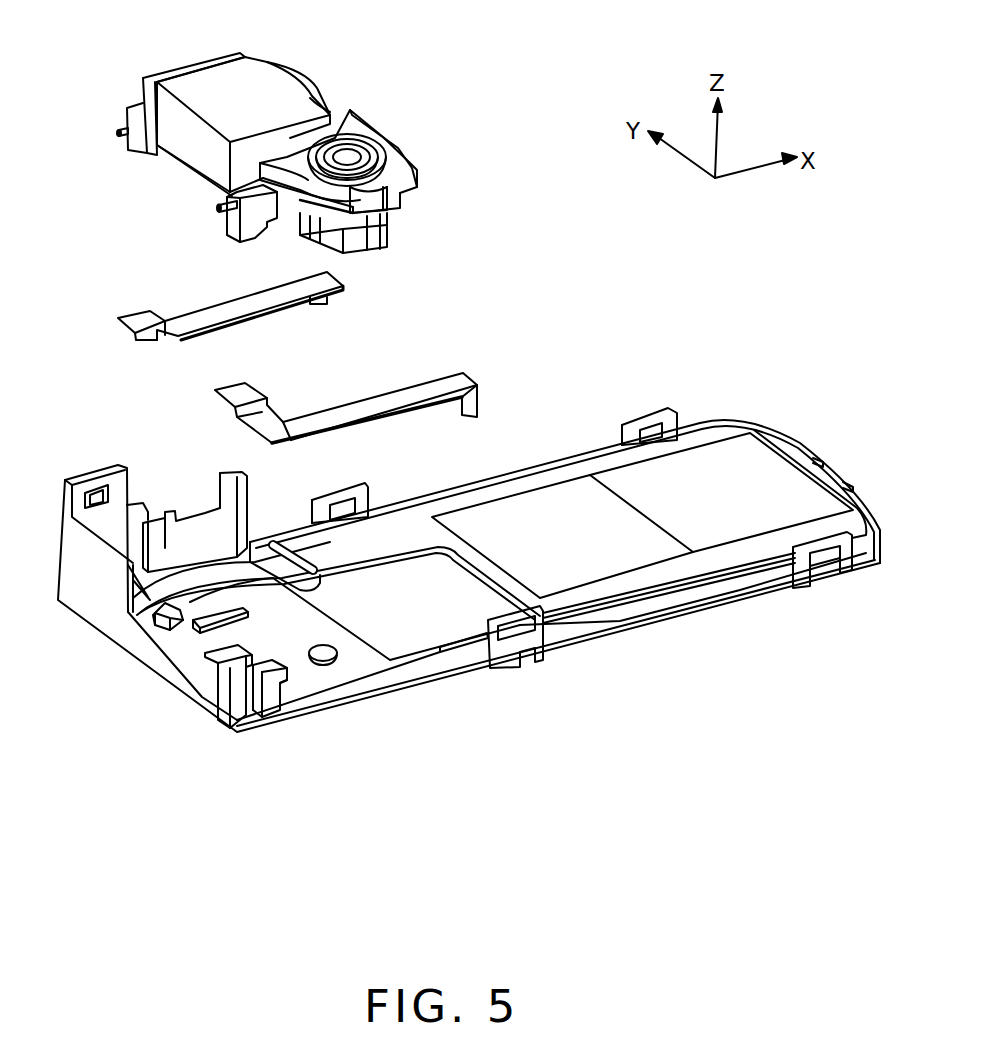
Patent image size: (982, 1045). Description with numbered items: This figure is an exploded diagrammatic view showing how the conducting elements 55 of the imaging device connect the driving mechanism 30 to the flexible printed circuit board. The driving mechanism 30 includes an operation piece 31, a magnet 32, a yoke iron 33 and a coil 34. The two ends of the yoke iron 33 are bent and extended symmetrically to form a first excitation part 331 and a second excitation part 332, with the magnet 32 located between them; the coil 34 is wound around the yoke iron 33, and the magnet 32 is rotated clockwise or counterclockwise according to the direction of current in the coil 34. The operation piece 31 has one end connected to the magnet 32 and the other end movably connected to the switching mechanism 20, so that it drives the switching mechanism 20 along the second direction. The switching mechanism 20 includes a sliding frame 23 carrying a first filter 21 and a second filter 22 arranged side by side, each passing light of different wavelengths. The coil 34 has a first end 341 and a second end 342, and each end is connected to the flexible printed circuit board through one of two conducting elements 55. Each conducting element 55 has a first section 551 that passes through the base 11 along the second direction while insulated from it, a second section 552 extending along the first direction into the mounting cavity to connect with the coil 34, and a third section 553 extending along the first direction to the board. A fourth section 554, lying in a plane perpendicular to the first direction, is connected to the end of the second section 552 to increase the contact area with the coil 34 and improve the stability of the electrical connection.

The driving mechanism 30 is at (183, 64).
The coil 34 is at (252, 85).
The second end 342 is at (127, 126).
The first end 341 is at (216, 206).
The yoke iron 33 is at (350, 124).
The first excitation part 331 is at (402, 166).
The second excitation part 332 is at (303, 206).
The magnet 32 is at (372, 185).
The operation piece 31 is at (370, 229).
The fourth section 554 is at (195, 316).
The conducting element 55 is at (470, 377).
The first section 551 is at (400, 397).
The second section 552 is at (267, 400).
The third section 553 is at (480, 401).
The switching mechanism 20 is at (790, 455).
The sliding frame 23 is at (710, 420).
The first filter 21 is at (607, 558).
The second filter 22 is at (720, 525).
The base 11 is at (560, 640).